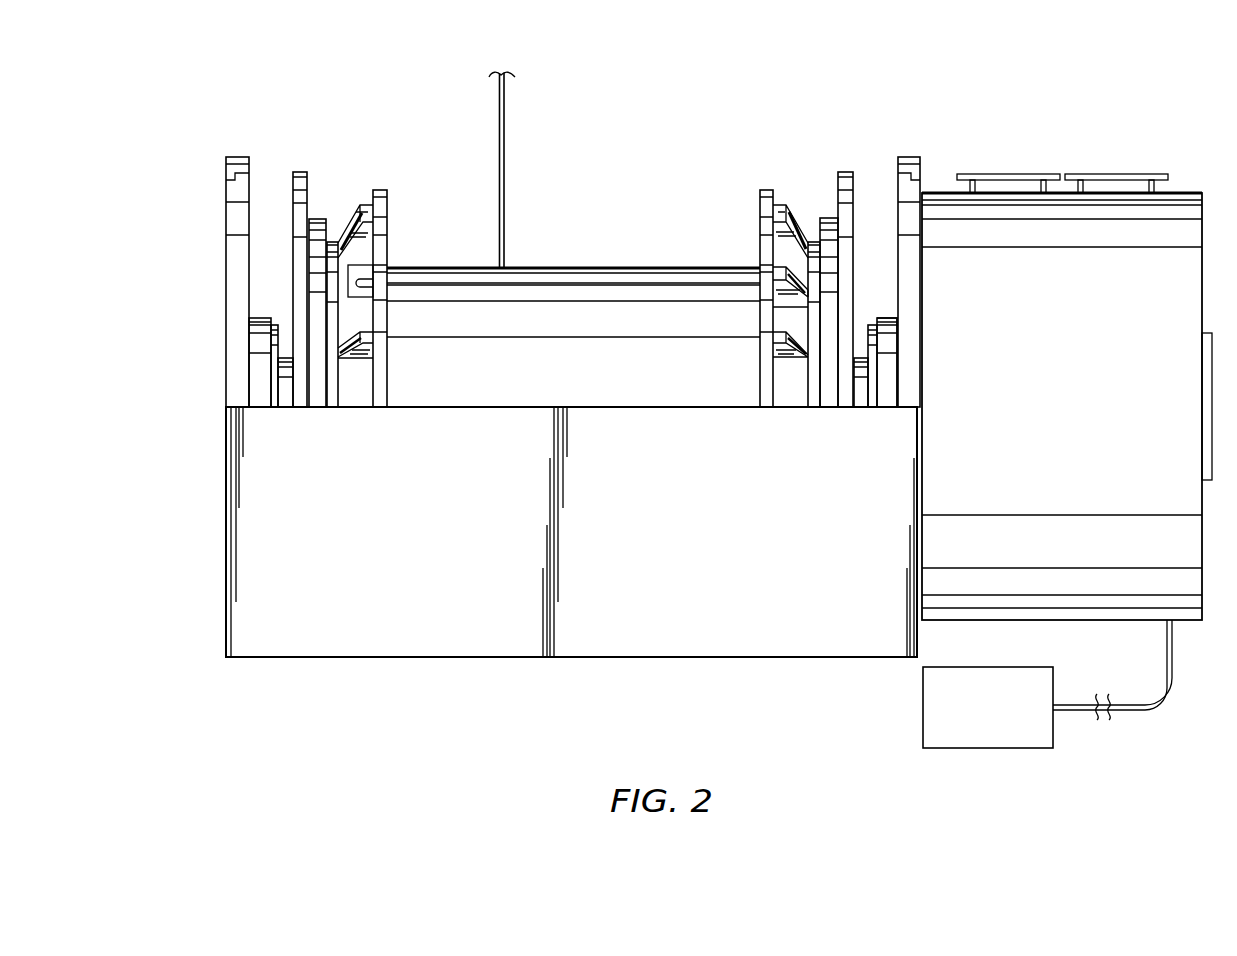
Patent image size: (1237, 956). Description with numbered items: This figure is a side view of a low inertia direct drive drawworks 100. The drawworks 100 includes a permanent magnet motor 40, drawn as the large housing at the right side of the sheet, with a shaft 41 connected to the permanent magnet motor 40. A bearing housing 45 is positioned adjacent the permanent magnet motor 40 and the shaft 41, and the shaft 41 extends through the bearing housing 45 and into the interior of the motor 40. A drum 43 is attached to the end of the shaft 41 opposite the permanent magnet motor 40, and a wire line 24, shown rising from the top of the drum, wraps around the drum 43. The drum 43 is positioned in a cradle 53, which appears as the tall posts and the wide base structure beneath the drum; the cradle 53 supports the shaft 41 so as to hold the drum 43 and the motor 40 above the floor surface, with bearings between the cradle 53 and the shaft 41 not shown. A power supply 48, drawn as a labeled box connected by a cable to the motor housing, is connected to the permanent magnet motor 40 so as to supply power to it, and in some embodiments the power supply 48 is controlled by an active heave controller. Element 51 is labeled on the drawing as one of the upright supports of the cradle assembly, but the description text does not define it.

The drawworks 100 is at (296, 70).
The cradle 53 is at (230, 157).
The support post 51 is at (303, 170).
The shaft 41 is at (288, 358).
The wire line 24 is at (505, 130).
The drum 43 is at (577, 268).
The bearing housing 45 is at (886, 317).
The permanent magnet motor 40 is at (1187, 193).
The power supply 48 is at (1030, 748).